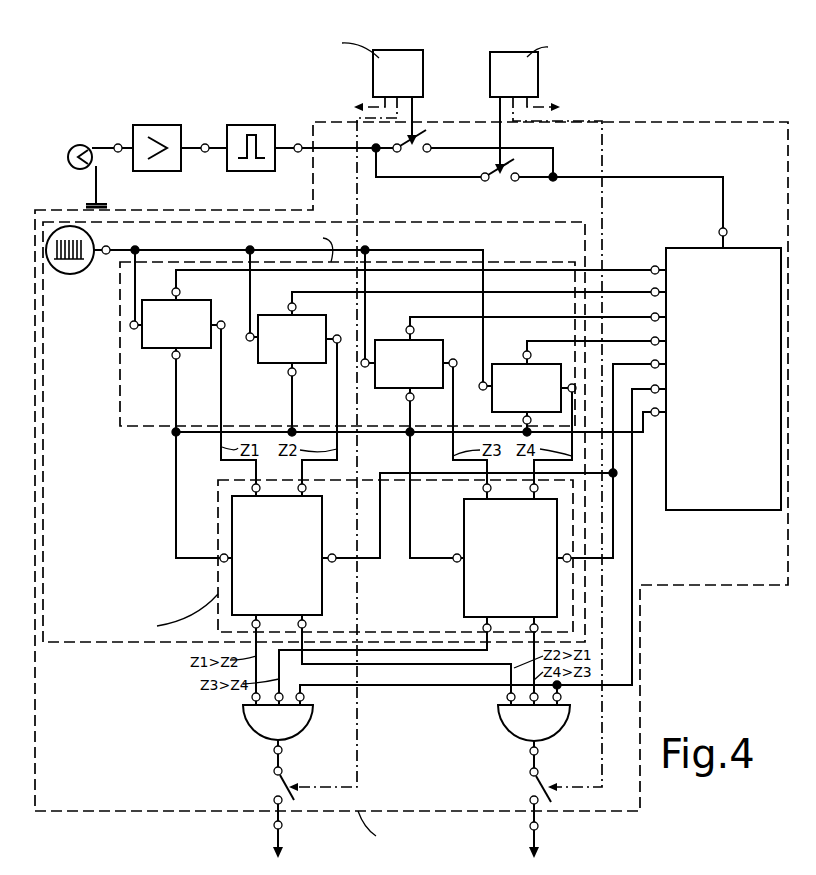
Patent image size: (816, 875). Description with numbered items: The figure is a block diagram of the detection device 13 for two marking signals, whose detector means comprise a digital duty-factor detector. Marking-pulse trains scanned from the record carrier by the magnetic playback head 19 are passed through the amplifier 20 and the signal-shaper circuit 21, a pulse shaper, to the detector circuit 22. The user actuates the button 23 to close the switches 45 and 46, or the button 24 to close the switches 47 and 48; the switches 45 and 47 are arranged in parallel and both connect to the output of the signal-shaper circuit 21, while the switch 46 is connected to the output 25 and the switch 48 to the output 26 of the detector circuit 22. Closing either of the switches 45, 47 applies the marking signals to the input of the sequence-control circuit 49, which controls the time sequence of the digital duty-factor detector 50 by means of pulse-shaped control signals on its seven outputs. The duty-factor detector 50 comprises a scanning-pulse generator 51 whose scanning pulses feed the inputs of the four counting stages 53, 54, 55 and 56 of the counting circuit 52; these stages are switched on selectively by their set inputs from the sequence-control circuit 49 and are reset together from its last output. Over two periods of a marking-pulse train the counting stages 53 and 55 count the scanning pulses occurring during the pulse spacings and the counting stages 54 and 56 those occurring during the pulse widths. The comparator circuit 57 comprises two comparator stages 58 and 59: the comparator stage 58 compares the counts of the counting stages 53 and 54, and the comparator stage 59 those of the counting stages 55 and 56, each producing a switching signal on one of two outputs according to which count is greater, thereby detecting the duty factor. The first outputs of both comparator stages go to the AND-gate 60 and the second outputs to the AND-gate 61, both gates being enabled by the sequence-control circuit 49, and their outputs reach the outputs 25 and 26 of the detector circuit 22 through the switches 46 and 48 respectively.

The detection device 13 is at (181, 47).
The magnetic playback head 19 is at (78, 146).
The amplifier 20 is at (166, 126).
The signal-shaper circuit 21 is at (259, 126).
The detector circuit 22 is at (167, 811).
The button 23 is at (394, 60).
The button 24 is at (508, 60).
The output 25 is at (285, 826).
The output 26 is at (540, 828).
The switch 45 is at (418, 152).
The switch 46 is at (288, 790).
The switch 47 is at (505, 181).
The switch 48 is at (542, 792).
The sequence-control circuit 49 is at (726, 512).
The digital duty-factor detector 50 is at (120, 645).
The scanning-pulse generator 51 is at (86, 268).
The counting circuit 52 is at (119, 386).
The counting stage 53 is at (163, 312).
The counting stage 54 is at (278, 322).
The counting stage 55 is at (394, 346).
The counting stage 56 is at (512, 370).
The comparator circuit 57 is at (216, 576).
The comparator stage 58 is at (322, 590).
The comparator stage 59 is at (470, 582).
The AND-gate 60 is at (272, 734).
The AND-gate 61 is at (530, 734).